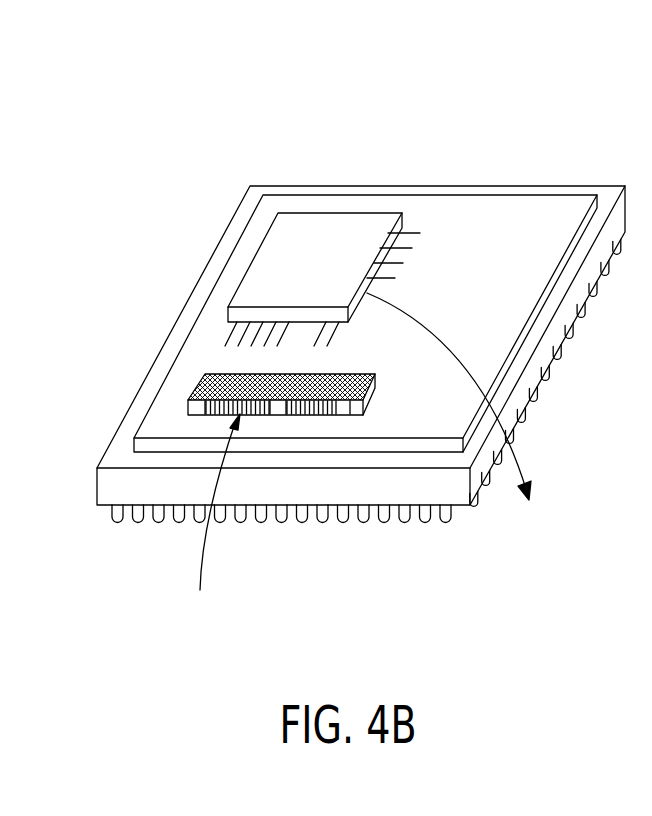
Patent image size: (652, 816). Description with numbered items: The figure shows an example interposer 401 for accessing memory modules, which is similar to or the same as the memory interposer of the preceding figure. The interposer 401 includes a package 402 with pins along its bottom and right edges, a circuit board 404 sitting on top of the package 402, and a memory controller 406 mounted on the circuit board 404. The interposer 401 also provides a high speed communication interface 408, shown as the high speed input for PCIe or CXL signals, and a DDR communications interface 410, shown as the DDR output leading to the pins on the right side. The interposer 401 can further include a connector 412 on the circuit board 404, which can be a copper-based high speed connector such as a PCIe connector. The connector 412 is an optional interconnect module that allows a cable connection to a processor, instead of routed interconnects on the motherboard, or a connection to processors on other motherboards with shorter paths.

The interposer 401 is at (553, 137).
The package 402 is at (188, 328).
The circuit board 404 is at (170, 397).
The memory controller 406 is at (340, 222).
The high speed communication interface 408 is at (199, 570).
The DDR communications interface 410 is at (515, 470).
The connector 412 is at (207, 386).